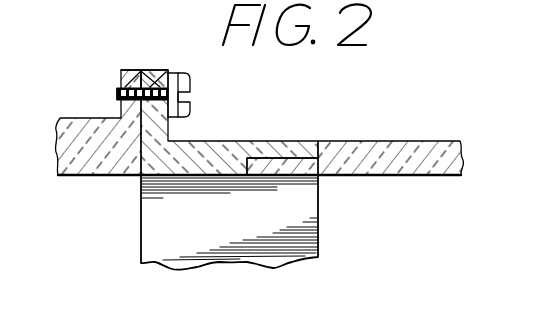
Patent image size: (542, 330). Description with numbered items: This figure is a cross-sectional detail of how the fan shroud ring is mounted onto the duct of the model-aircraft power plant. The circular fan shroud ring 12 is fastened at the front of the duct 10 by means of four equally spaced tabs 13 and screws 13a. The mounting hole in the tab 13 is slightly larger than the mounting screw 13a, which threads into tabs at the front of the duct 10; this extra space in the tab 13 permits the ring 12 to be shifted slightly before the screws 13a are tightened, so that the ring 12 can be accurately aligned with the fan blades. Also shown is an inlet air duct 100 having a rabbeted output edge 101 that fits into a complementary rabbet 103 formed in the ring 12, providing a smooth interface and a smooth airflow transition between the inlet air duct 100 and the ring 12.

The duct 10 is at (116, 176).
The fan shroud ring 12 is at (258, 142).
The tab 13 is at (152, 78).
The screw 13a is at (150, 108).
The inlet air duct 100 is at (390, 148).
The rabbeted output edge 101 is at (283, 178).
The rabbet 103 is at (312, 156).